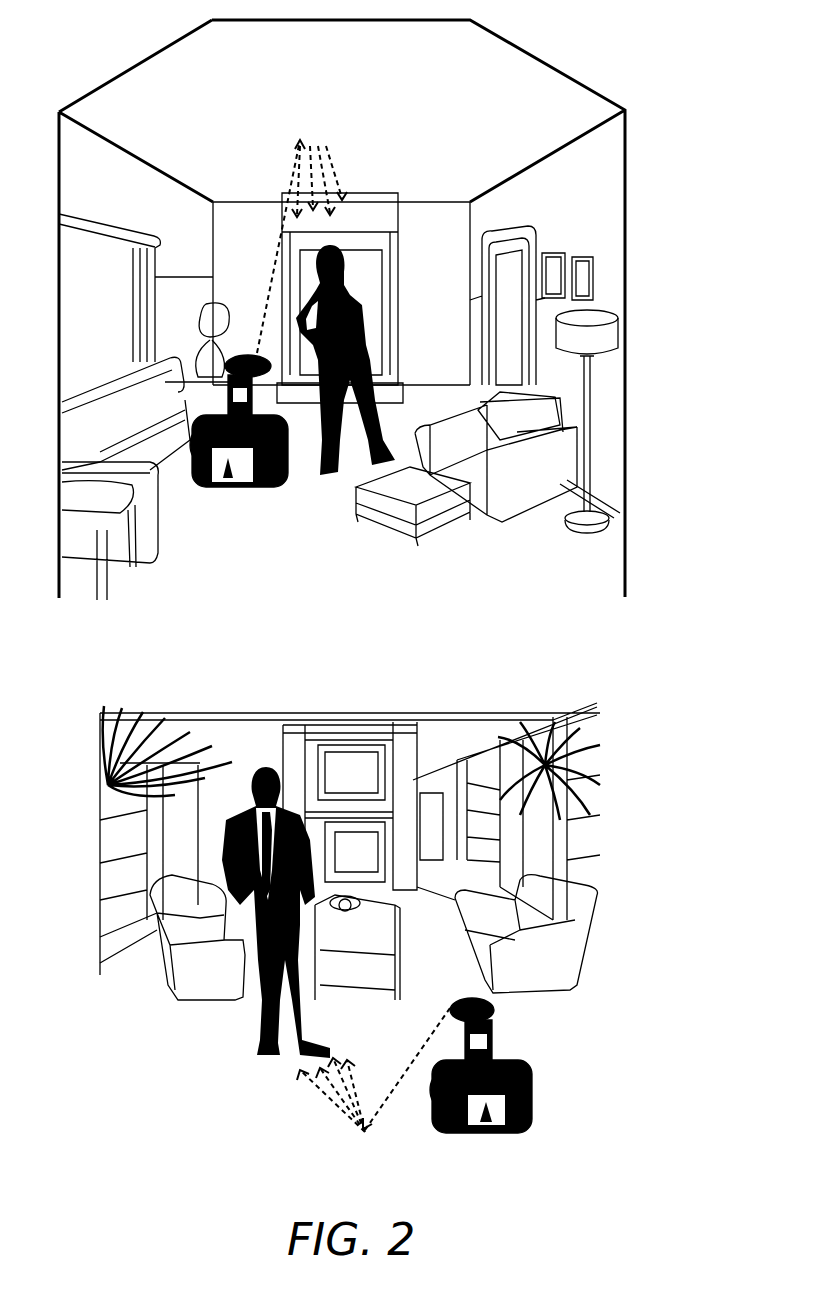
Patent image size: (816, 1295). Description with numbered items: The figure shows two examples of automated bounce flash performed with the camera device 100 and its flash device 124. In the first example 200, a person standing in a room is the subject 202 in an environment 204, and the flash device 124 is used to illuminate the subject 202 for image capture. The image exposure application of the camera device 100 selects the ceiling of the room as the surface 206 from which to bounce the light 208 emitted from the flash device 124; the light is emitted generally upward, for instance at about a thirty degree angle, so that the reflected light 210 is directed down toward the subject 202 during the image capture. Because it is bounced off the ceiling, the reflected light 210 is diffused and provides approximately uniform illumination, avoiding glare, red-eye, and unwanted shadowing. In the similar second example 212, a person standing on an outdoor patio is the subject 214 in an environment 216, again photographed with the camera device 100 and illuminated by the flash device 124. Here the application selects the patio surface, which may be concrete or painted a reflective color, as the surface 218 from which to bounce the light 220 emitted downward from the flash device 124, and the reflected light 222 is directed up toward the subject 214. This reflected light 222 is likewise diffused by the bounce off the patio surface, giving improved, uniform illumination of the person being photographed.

The camera device 100 is at (213, 515).
The flash device 124 is at (221, 374).
The example 200 is at (606, 72).
The subject 202 is at (357, 276).
The environment 204 is at (313, 502).
The surface 206 is at (304, 68).
The light 208 is at (285, 175).
The reflected light 210 is at (343, 177).
The example 212 is at (467, 680).
The subject 214 is at (204, 803).
The environment 216 is at (140, 968).
The surface 218 is at (238, 1062).
The light 220 is at (375, 1053).
The reflected light 222 is at (276, 1116).